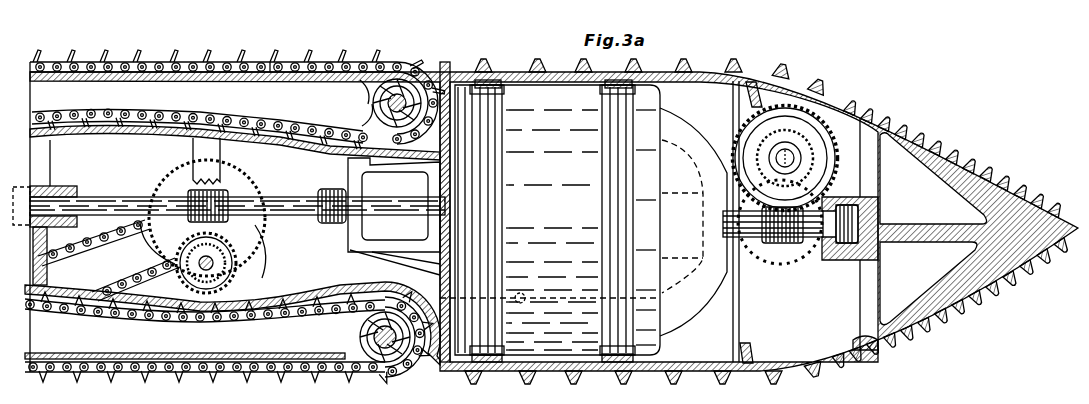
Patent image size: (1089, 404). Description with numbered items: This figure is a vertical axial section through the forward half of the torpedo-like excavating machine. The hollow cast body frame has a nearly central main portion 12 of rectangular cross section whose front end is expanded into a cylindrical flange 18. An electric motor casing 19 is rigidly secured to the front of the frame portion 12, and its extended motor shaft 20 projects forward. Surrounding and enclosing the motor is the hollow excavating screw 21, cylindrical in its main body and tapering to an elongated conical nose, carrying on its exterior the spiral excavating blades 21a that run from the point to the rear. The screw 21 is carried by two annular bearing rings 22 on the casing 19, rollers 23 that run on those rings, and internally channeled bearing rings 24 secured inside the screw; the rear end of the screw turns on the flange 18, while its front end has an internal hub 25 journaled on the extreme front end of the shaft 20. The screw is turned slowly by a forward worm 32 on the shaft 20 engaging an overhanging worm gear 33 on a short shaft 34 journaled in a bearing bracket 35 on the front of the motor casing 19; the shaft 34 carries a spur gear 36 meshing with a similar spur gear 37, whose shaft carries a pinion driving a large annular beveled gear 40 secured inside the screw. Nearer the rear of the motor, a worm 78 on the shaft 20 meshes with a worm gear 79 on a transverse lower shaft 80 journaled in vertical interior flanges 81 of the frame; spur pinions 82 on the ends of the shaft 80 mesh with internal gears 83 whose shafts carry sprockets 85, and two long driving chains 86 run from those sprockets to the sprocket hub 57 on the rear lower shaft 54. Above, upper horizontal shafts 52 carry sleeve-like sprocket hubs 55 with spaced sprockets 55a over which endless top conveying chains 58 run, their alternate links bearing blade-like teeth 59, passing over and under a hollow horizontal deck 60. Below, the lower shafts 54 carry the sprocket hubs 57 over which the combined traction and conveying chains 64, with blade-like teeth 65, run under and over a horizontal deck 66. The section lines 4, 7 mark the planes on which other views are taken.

The section line 4- 4 is at (201, 42).
The section line 7- 7 is at (773, 368).
The main frame portion 12 is at (153, 137).
The cylindrical flange 18 is at (450, 72).
The motor casing 19 is at (540, 117).
The motor shaft 20 is at (288, 208).
The excavating screw 21 is at (837, 97).
The excavating blades 21a is at (921, 327).
The annular bearing rings 22 is at (606, 199).
The rollers 23 is at (618, 92).
The internally channeled annular bearing rings 24 is at (617, 85).
The internal hub 25 is at (879, 206).
The forward worm 32 is at (791, 244).
The worm gear 33 is at (818, 147).
The short shaft 34 is at (802, 158).
The bearing bracket 35 is at (708, 167).
The spur gear 36 is at (788, 157).
The spur gear 37 is at (779, 262).
The annular beveled gear 40 is at (751, 82).
The upper horizontal shafts 52 is at (404, 96).
The lower horizontal shafts 54 is at (388, 349).
The sprocket hubs 55 is at (394, 90).
The sprockets 55a is at (369, 78).
The sprocket hubs 57 is at (369, 352).
The top chains 58 is at (277, 68).
The blade-like teeth 59 is at (137, 65).
The horizontal deck 60 is at (285, 120).
The combined traction and conveying chains 64 is at (90, 321).
The blade-like teeth 65 is at (310, 376).
The horizontal deck 66 is at (232, 323).
The worm 78 is at (222, 192).
The worm gear 79 is at (240, 278).
The transverse lower shaft 80 is at (186, 280).
The vertical interior flanges 81 is at (200, 153).
The spur pinions 82 is at (260, 265).
The internal gears 83 is at (262, 247).
The sprockets 85 is at (98, 256).
The driving sprocket chains 86 is at (125, 282).